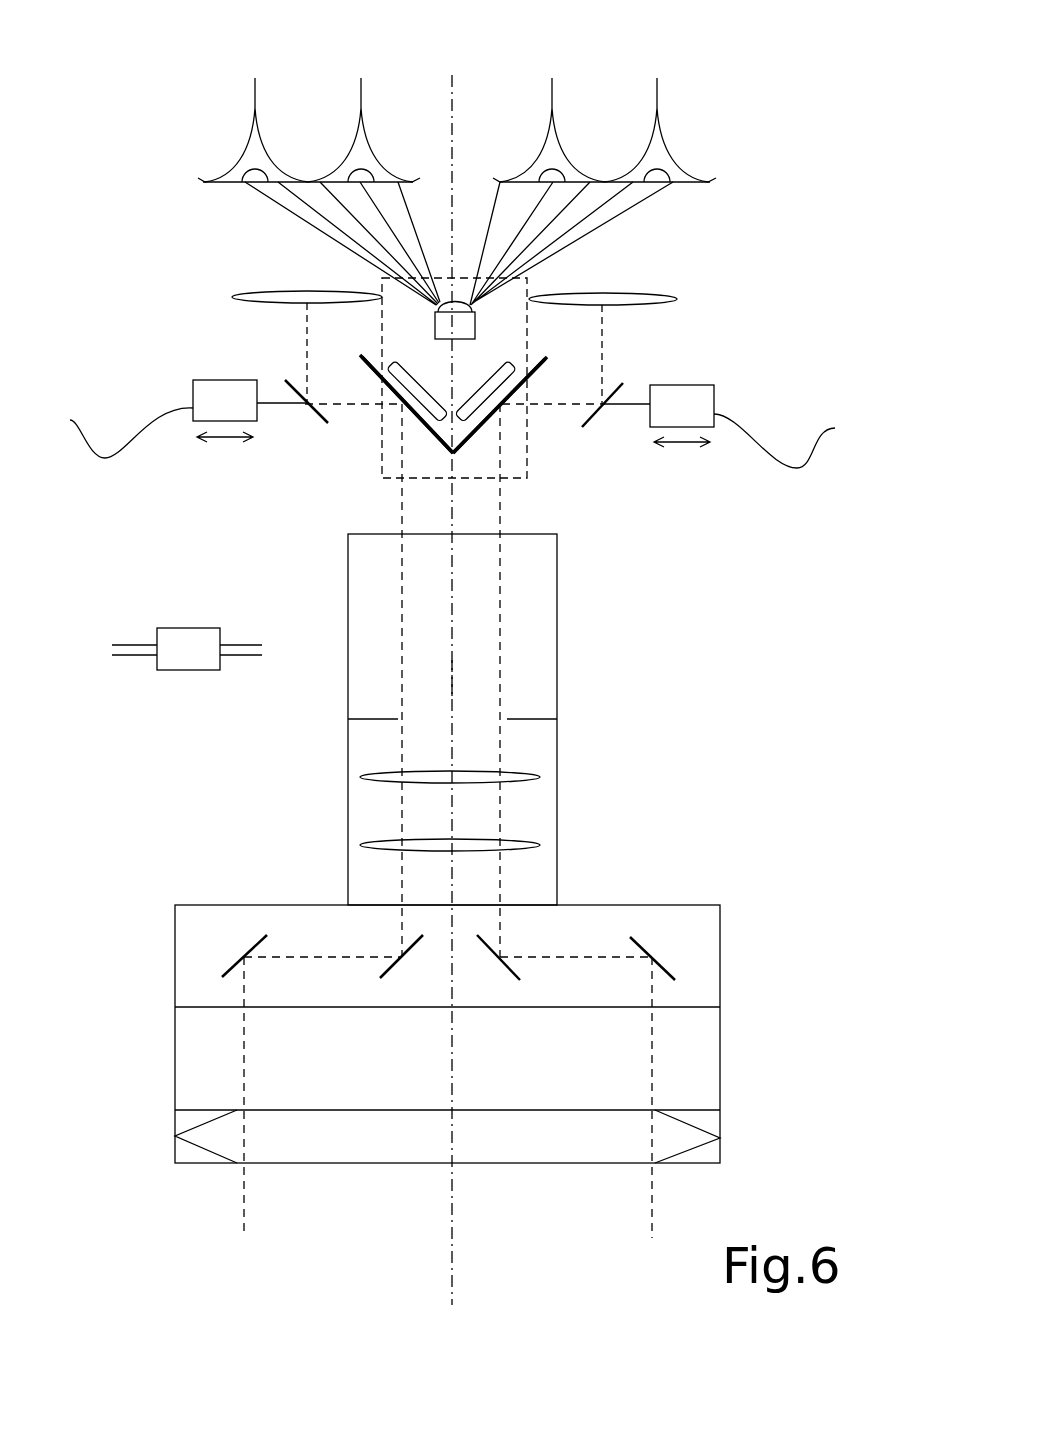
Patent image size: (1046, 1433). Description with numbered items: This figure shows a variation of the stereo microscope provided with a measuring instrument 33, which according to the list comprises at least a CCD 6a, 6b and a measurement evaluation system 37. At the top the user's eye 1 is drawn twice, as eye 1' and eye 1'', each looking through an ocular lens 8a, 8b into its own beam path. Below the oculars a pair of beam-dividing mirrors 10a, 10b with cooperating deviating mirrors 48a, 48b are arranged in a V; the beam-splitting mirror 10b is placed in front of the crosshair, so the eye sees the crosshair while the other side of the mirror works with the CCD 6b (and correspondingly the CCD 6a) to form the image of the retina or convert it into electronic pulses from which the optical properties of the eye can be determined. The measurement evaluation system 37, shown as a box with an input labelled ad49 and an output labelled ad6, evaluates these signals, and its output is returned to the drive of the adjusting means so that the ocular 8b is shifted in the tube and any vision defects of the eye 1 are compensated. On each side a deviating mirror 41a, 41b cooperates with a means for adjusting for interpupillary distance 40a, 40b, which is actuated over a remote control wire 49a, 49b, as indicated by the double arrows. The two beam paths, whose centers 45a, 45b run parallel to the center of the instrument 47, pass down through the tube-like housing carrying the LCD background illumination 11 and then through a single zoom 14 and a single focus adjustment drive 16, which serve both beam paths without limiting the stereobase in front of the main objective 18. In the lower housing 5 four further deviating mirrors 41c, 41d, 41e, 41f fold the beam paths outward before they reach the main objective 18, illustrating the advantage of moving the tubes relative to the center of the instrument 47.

The user's eye 1 is at (253, 130).
The user's eye 1' is at (318, 76).
The user's eye 1'' is at (688, 92).
The measurement system 33 is at (446, 268).
The ocular lens 8a is at (297, 289).
The ocular lens 8b is at (620, 291).
The beam-dividing mirror 10a is at (358, 353).
The cooperating deviating mirror 48a is at (407, 405).
The beam-dividing mirror 10b is at (548, 355).
The cooperating deviating mirror 48b is at (499, 406).
The CCD or sensor 6a is at (392, 405).
The CCD or sensor 6b is at (505, 405).
The deviating mirror 41a is at (286, 381).
The deviating mirror 41b is at (625, 384).
The means for adjusting for interpupillary distance 40a is at (200, 400).
The means for adjusting for interpupillary distance 40b is at (706, 405).
The remote control wire 49a is at (138, 435).
The remote control wire 49b is at (768, 444).
The measurement evaluation system 37 is at (204, 664).
The signal input ad49 is at (103, 653).
The signal output ad6 is at (264, 653).
The LCD background illumination 11 is at (348, 677).
The center of the beam path 45a is at (403, 633).
The center of the beam path 45b is at (502, 633).
The center of the instrument 47 is at (453, 678).
The zoom system 14 is at (540, 777).
The focus adjustment drive 16 is at (540, 845).
The main objective 18 is at (588, 1157).
The partially transparent IR mirror 5 is at (710, 988).
The deviating mirror 41c is at (225, 965).
The deviating mirror 41d is at (670, 973).
The deviating mirror 41e is at (383, 978).
The deviating mirror 41f is at (513, 970).